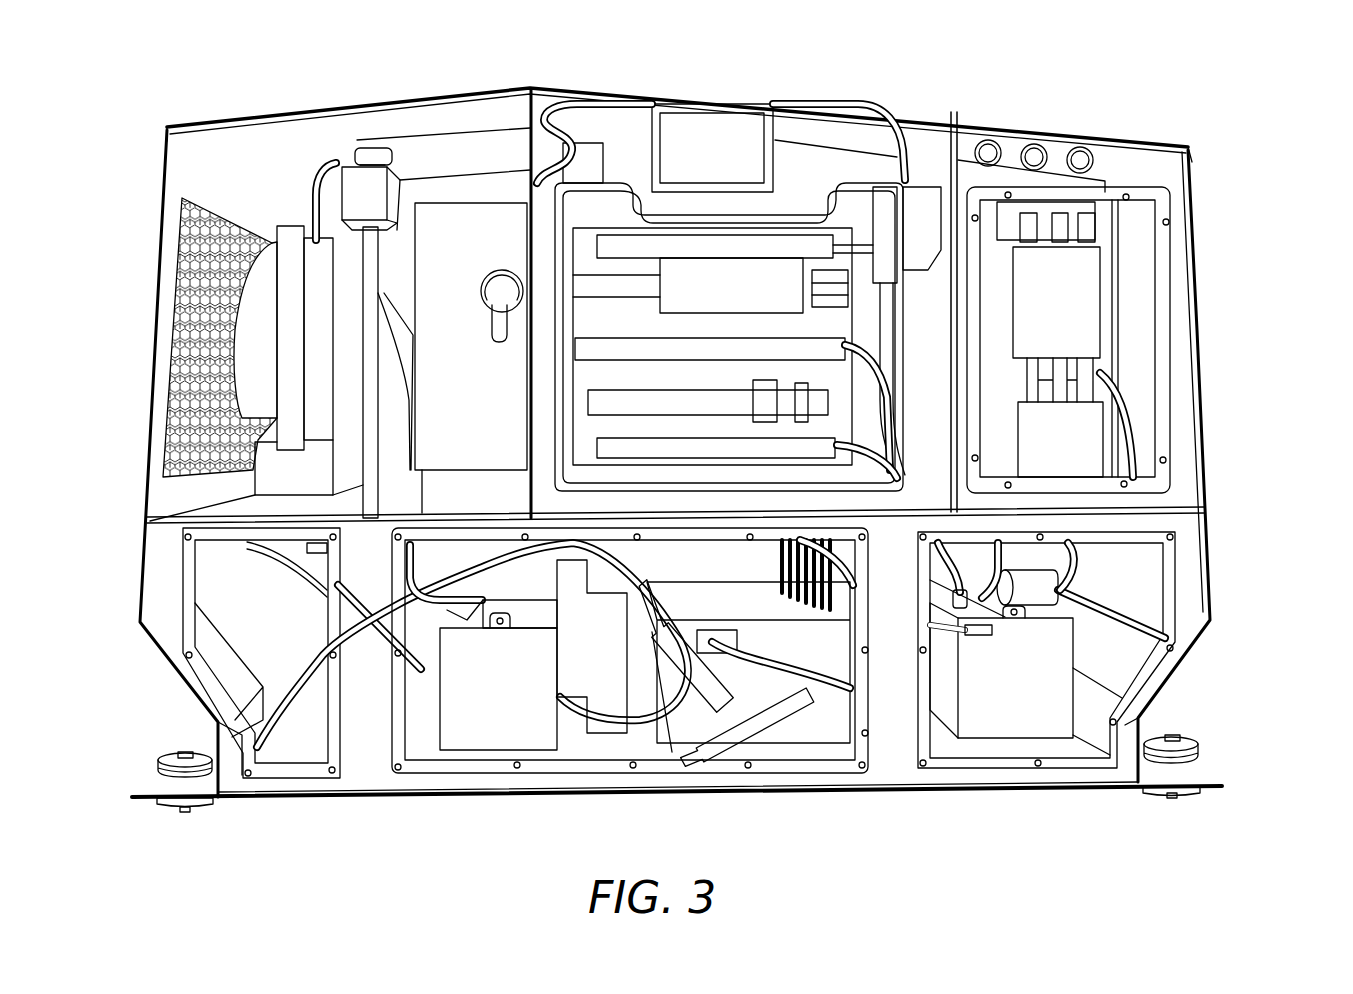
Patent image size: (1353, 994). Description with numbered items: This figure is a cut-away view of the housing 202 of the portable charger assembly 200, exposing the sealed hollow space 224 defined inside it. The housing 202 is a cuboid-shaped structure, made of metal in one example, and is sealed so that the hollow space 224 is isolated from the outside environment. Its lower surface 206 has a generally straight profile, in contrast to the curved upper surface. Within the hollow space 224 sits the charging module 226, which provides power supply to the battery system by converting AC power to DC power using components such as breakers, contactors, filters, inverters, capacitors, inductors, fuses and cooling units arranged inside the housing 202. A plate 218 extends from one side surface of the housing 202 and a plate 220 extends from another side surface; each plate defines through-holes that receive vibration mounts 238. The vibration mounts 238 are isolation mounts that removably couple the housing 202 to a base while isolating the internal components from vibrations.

The portable charger assembly 200 is at (1225, 86).
The housing 202 is at (1090, 106).
The lower surface 206 is at (830, 797).
The plate 218 is at (158, 768).
The plate 220 is at (1192, 772).
The hollow space 224 is at (1145, 512).
The charging module 226 is at (224, 348).
The vibration mounts 238 is at (164, 759).